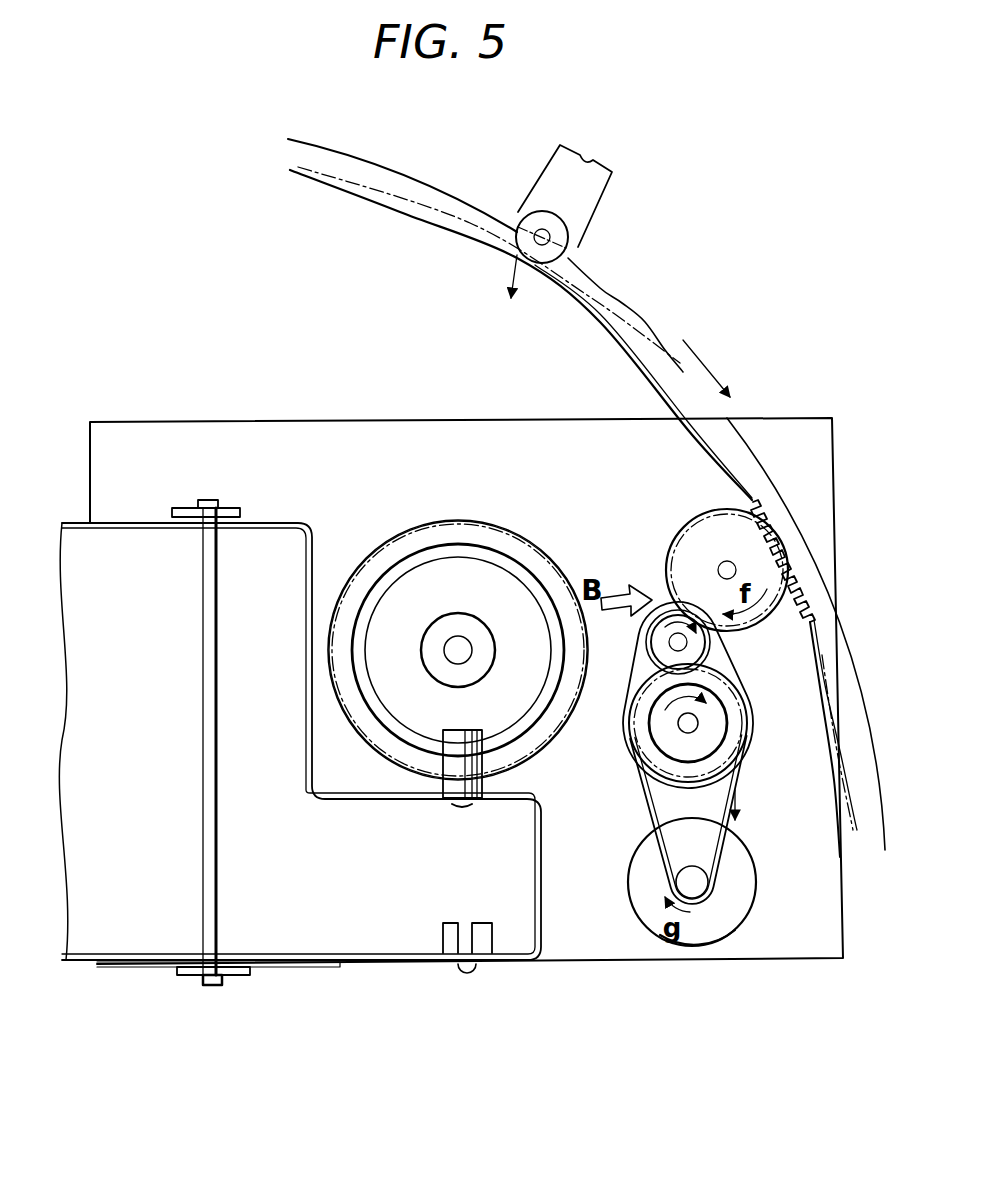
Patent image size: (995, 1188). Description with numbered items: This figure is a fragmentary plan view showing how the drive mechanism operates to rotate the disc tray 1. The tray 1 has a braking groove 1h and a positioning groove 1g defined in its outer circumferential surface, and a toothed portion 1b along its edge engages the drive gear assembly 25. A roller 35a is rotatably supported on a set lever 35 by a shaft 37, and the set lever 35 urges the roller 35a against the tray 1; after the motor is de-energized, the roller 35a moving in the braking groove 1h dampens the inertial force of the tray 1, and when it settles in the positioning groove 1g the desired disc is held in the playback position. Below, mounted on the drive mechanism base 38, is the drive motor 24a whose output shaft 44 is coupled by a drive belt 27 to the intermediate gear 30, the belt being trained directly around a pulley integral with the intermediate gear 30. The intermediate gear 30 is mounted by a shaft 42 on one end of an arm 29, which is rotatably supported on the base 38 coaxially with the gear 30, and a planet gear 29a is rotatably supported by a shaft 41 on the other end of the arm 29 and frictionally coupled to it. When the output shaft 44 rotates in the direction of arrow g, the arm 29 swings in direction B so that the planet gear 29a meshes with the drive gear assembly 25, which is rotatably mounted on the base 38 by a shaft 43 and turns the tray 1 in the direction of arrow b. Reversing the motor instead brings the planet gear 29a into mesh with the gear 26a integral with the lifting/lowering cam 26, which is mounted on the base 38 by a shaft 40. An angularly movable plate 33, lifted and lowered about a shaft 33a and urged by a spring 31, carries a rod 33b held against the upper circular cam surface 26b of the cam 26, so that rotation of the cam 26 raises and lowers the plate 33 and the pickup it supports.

The tray 1 is at (369, 160).
The toothed portion of band 1b is at (758, 506).
The positioning groove 1g is at (506, 250).
The braking groove 1h is at (596, 282).
The drive motor 24a is at (707, 938).
The drive gear assembly 25 is at (693, 556).
The lifting/lowering cam 26 is at (404, 527).
The gear 26a is at (447, 522).
The upper circular cam surface 26b is at (386, 578).
The drive belt 27 is at (725, 845).
The arm 29 is at (656, 612).
The planet gear 29a is at (712, 644).
The intermediate gear 30 is at (710, 741).
The spring 31 is at (473, 966).
The angularly movable plate 33 is at (339, 950).
The shaft 33a is at (223, 985).
The rod 33b is at (443, 796).
The set lever 35 is at (591, 165).
The roller 35a is at (526, 216).
The shaft 37 is at (542, 229).
The drive mechanism base 38 is at (611, 966).
The shaft 40 is at (457, 652).
The shaft 41 is at (688, 650).
The shaft 42 is at (699, 722).
The shaft 43 is at (727, 562).
The output shaft 44 is at (706, 883).